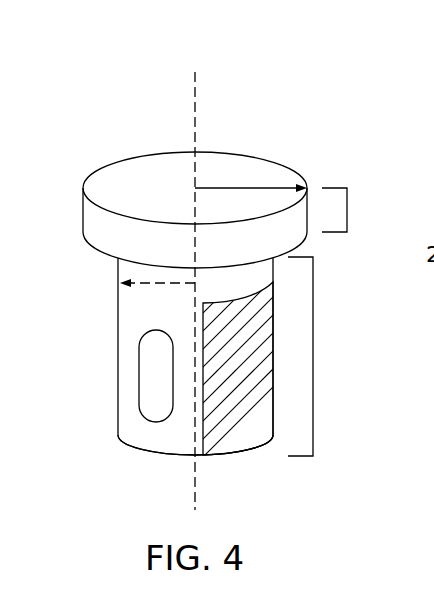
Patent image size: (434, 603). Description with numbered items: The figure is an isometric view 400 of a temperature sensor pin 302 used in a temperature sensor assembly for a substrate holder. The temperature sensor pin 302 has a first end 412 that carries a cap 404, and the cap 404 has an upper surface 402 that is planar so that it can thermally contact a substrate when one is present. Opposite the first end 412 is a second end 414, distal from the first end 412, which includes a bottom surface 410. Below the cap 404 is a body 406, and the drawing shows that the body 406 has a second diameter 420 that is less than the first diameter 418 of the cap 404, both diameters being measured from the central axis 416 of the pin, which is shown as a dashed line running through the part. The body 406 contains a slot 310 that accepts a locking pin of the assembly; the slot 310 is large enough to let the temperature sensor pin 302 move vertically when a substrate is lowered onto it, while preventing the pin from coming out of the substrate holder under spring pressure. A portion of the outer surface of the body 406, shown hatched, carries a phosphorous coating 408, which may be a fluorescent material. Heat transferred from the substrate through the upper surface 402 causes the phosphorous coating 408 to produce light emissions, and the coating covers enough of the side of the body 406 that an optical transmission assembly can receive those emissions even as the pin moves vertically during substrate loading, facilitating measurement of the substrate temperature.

The isometric view 400 is at (216, 275).
The temperature sensor pin 302 is at (192, 173).
The upper surface 402 is at (150, 193).
The first end 412 is at (167, 195).
The first diameter 418 is at (235, 187).
The cap 404 is at (347, 210).
The central axis 416 is at (195, 80).
The second diameter 420 is at (165, 288).
The slot 310 is at (139, 376).
The phosphorous coating 408 is at (255, 384).
The body 406 is at (313, 357).
The second end 414 is at (118, 427).
The bottom surface 410 is at (150, 451).